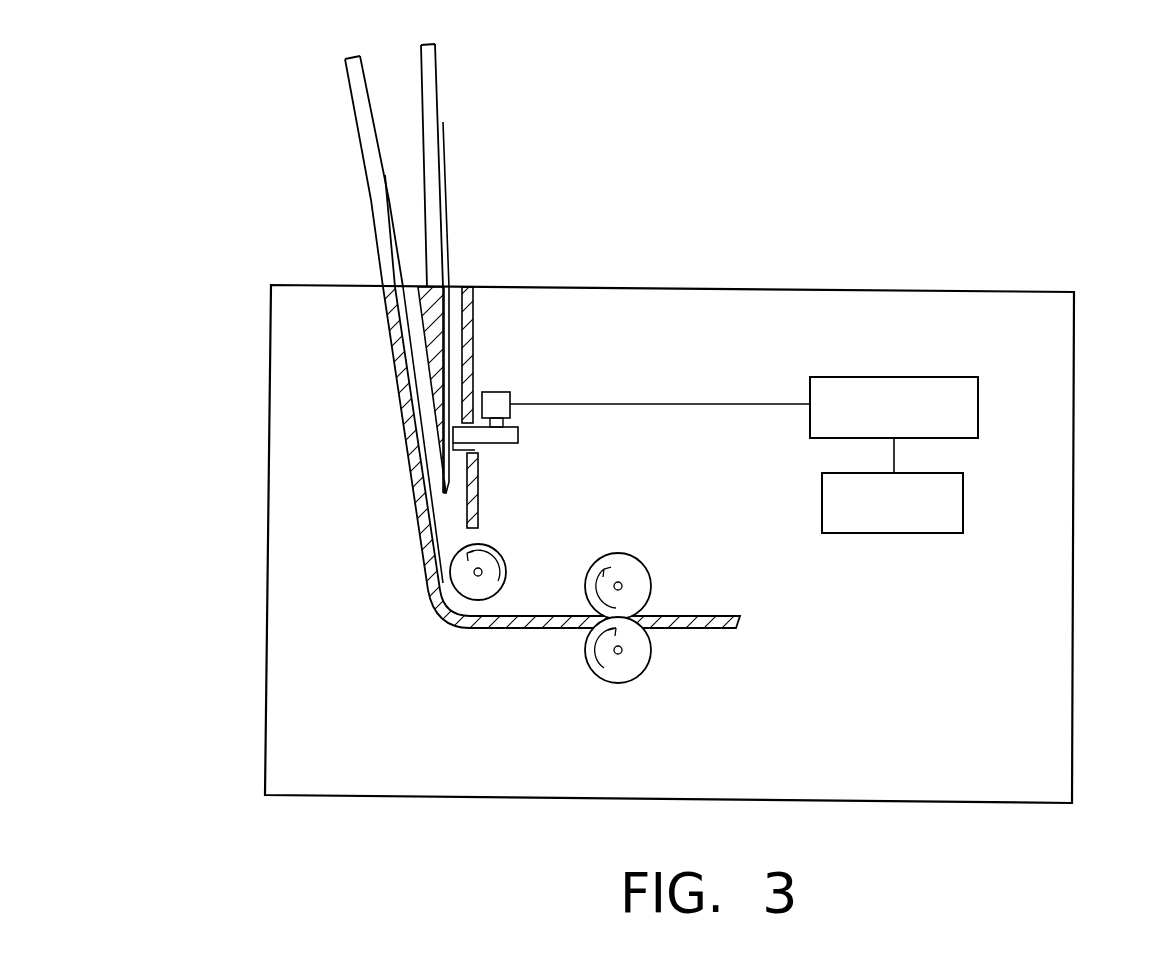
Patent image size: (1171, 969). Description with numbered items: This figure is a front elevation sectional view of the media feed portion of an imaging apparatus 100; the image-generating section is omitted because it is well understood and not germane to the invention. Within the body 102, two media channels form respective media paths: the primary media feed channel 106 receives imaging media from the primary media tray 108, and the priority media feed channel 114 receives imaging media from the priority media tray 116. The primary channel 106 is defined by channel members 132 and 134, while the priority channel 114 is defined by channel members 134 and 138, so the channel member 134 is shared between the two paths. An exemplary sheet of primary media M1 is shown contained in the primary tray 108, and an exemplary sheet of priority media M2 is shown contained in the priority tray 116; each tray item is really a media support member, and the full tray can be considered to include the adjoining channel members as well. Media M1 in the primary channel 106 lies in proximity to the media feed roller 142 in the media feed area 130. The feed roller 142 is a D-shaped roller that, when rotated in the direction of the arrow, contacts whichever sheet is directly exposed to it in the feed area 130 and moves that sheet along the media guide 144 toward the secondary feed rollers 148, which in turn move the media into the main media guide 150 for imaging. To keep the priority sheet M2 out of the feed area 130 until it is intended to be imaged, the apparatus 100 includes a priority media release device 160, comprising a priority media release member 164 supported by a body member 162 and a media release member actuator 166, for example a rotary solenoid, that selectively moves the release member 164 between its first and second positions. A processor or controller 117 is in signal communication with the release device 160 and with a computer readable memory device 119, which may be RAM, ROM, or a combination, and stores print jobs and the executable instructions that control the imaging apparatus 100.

The imaging apparatus 100 is at (1073, 185).
The body 102 is at (1074, 444).
The primary media feed channel 106 is at (413, 330).
The primary media tray 108 is at (353, 98).
The primary media sheet M1 is at (390, 197).
The priority media sheet M2 is at (447, 167).
The priority media feed channel 114 is at (452, 298).
The priority media tray 116 is at (433, 85).
The processor 117 is at (978, 428).
The memory device 119 is at (963, 520).
The media feed area 130 is at (541, 575).
The channel member 132 is at (418, 488).
The channel member 134 is at (435, 377).
The channel member 138 is at (473, 318).
The media feed roller 142 is at (500, 558).
The media guide 144 is at (500, 628).
The secondary feed rollers 148 is at (645, 588).
The main media guide 150 is at (717, 628).
The priority media release device 160 is at (550, 418).
The body member 162 is at (516, 436).
The priority media release member 164 is at (457, 447).
The media release member actuator 166 is at (498, 397).